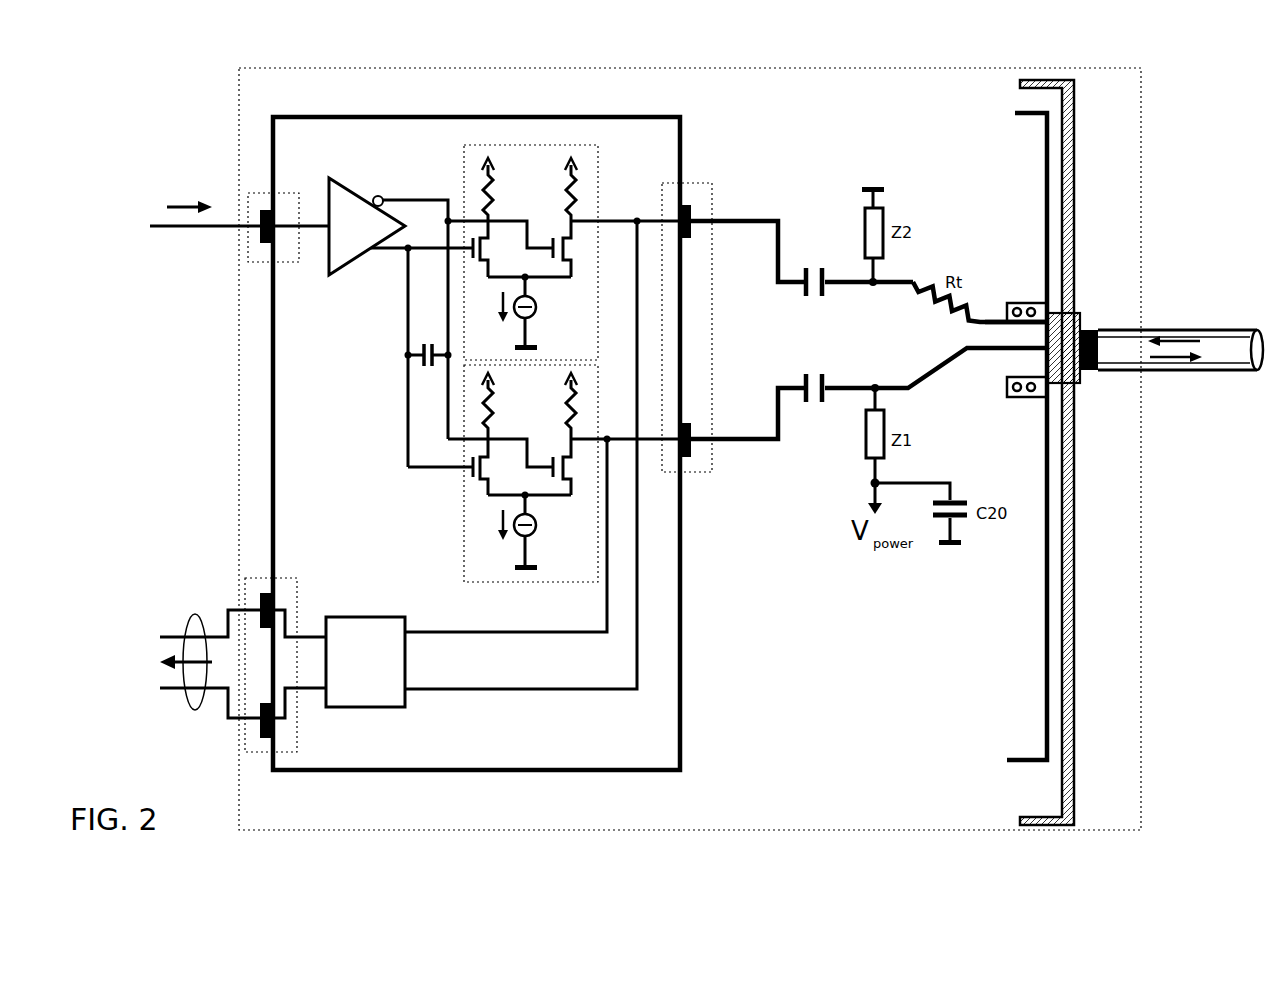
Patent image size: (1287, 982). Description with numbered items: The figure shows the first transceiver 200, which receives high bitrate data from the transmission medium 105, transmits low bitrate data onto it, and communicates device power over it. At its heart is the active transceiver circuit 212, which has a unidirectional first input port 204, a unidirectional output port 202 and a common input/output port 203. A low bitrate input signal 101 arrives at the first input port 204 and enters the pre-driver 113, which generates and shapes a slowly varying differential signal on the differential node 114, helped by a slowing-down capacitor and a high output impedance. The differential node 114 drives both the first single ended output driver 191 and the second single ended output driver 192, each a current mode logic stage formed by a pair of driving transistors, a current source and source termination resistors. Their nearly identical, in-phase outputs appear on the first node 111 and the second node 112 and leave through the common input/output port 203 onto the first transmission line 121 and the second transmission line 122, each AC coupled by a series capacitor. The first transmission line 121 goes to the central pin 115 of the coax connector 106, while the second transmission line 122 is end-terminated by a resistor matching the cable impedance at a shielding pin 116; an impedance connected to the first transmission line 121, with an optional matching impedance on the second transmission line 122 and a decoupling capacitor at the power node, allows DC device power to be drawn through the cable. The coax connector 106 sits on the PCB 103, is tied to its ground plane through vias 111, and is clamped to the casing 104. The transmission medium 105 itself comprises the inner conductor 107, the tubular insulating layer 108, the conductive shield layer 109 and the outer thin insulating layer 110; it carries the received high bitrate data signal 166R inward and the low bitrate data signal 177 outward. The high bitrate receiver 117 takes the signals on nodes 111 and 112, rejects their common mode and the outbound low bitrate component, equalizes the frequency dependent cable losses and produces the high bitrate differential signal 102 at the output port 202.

The low bitrate input signal 101 is at (185, 204).
The high bitrate differential signal 102 is at (191, 612).
The PCB 103 is at (1043, 173).
The casing 104 is at (1074, 178).
The transmission medium 105 is at (1117, 302).
The coax connector 106 is at (1076, 386).
The inner conductor 107 is at (1231, 344).
The tubular insulating layer 108 is at (1214, 336).
The conductive shield layer 109 is at (1228, 372).
The thin insulating layer 110 is at (1212, 372).
The first node / vias 111 is at (1018, 302).
The second node 112 is at (505, 690).
The pre-driver 113 is at (370, 194).
The differential node 114 is at (426, 291).
The central pin 115 is at (1033, 343).
The shielding pin 116 is at (1005, 387).
The high bitrate receiver 117 is at (350, 707).
The first transmission line 121 is at (760, 444).
The second transmission line 122 is at (785, 288).
The received high bitrate data signal 166R is at (1183, 336).
The low bitrate data signal 177 is at (1168, 362).
The first single ended output driver 191 is at (462, 574).
The second single ended output driver 192 is at (464, 180).
The first transceiver 200 is at (1141, 681).
The output port 202 is at (262, 752).
The common input/output port 203 is at (706, 188).
The first input port 204 is at (270, 262).
The active transceiver circuit 212 is at (681, 709).